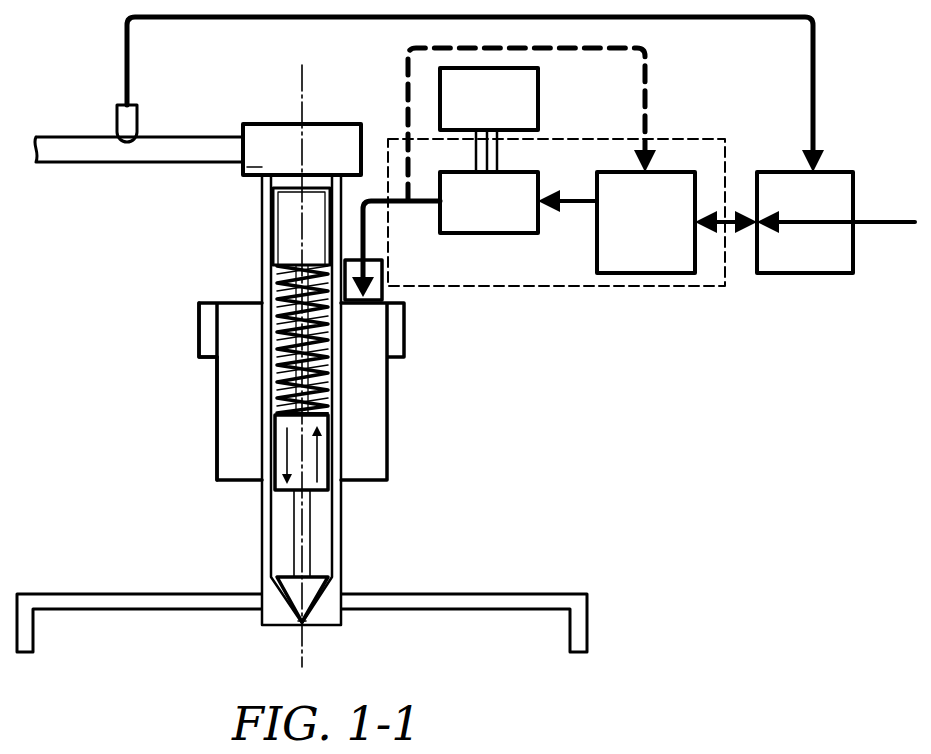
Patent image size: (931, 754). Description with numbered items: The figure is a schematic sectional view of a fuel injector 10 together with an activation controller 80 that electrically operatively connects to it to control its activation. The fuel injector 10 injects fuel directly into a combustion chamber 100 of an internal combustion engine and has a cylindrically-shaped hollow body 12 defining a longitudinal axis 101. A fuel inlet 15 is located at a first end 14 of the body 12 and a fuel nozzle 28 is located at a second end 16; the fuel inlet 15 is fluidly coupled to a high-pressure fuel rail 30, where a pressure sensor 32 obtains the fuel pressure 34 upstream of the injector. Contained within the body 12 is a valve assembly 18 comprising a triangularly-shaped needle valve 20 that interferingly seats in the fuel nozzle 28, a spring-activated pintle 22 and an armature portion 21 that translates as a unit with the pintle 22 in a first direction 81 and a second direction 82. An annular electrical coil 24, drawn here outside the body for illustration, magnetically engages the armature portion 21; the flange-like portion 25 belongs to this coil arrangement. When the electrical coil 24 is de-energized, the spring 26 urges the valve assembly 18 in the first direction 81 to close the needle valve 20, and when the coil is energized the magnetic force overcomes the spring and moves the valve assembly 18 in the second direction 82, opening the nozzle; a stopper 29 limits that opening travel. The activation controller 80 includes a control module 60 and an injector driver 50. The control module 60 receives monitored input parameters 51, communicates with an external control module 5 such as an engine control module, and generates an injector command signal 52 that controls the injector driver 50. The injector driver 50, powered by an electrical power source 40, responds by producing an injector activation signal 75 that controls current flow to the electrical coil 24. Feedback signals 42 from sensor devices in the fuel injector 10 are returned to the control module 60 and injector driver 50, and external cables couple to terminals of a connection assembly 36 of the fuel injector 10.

The external control module 5 is at (805, 222).
The fuel injector 10 is at (204, 389).
The body 12 is at (262, 228).
The first end 14 is at (236, 183).
The fuel inlet 15 is at (252, 167).
The second end 16 is at (352, 586).
The valve assembly 18 is at (285, 522).
The needle valve 20 is at (270, 586).
The armature portion 21 is at (275, 462).
The spring-activated pintle 22 is at (293, 557).
The electrical coil 24 is at (366, 410).
The housing flange 25 is at (199, 333).
The spring 26 is at (333, 374).
The fuel nozzle 28 is at (302, 625).
The stopper 29 is at (270, 260).
The high-pressure fuel rail 30 is at (71, 137).
The pressure sensor 32 is at (137, 125).
The fuel pressure 34 is at (459, 94).
The connection assembly 36 is at (383, 280).
The electrical power source 40 is at (489, 120).
The feedback signal 42 is at (516, 124).
The injector driver 50 is at (489, 202).
The monitored input parameters 51 is at (836, 212).
The injector command signal 52 is at (568, 193).
The control module 60 is at (677, 222).
The injector activation signal 75 is at (396, 249).
The activation controller 80 is at (548, 288).
The first direction 81 is at (331, 493).
The second direction 82 is at (331, 452).
The combustion chamber 100 is at (302, 623).
The longitudinal axis 101 is at (300, 93).